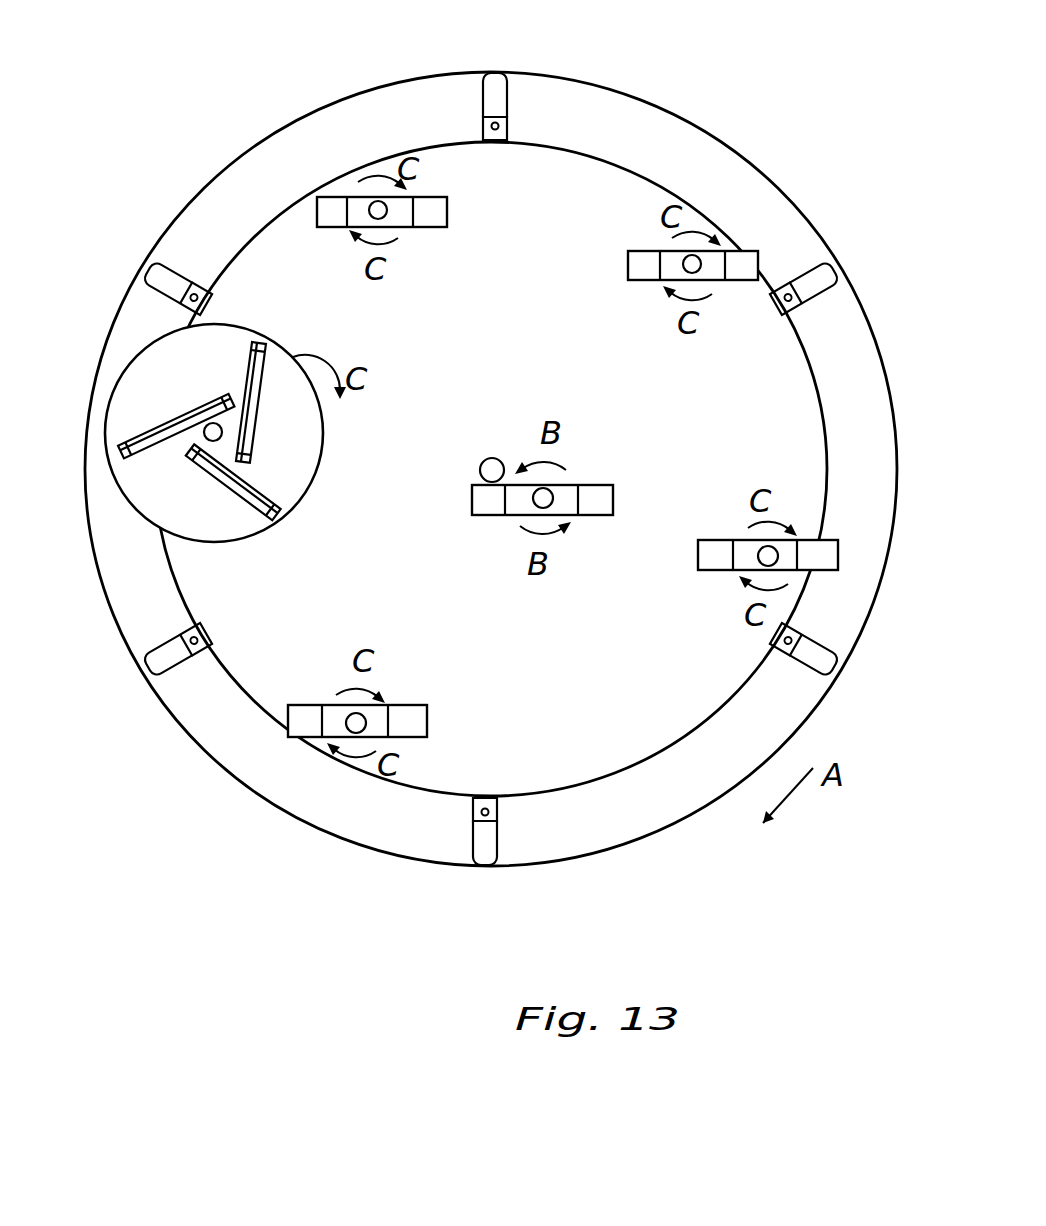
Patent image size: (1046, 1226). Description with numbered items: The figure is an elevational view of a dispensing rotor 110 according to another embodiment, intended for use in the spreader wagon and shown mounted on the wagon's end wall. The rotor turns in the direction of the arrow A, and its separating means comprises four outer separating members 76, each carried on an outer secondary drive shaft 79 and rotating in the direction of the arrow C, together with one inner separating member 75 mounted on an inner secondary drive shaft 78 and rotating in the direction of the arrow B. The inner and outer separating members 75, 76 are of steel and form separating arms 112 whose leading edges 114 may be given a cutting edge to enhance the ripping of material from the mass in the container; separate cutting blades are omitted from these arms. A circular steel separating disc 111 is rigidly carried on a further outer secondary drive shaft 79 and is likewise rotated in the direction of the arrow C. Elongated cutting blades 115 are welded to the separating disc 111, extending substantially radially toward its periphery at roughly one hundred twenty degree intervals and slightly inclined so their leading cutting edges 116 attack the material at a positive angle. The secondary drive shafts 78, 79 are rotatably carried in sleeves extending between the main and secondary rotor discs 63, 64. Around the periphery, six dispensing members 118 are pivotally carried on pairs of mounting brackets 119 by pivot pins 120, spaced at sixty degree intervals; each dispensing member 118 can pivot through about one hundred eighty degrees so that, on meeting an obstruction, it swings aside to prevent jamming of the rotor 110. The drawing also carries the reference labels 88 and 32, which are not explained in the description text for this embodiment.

The dispensing rotor 110 is at (710, 72).
The main rotor disc 63 is at (713, 142).
The secondary rotor disc 64 is at (200, 572).
The inner plate 88 is at (636, 743).
The dispensing member 118 is at (497, 76).
The mounting bracket 119 is at (507, 121).
The pivot pin 120 is at (488, 126).
The outer separating member 76 is at (445, 208).
The inner separating member 75 is at (573, 500).
The inner secondary drive shaft 78 is at (550, 502).
The outer secondary drive shaft 79 is at (387, 215).
The separating arm 112 is at (333, 217).
The leading edge 114 is at (332, 198).
The separating disc 111 is at (322, 465).
The cutting blade 115 is at (265, 342).
The leading cutting edge 116 is at (170, 430).
The locating pin 32 is at (492, 460).